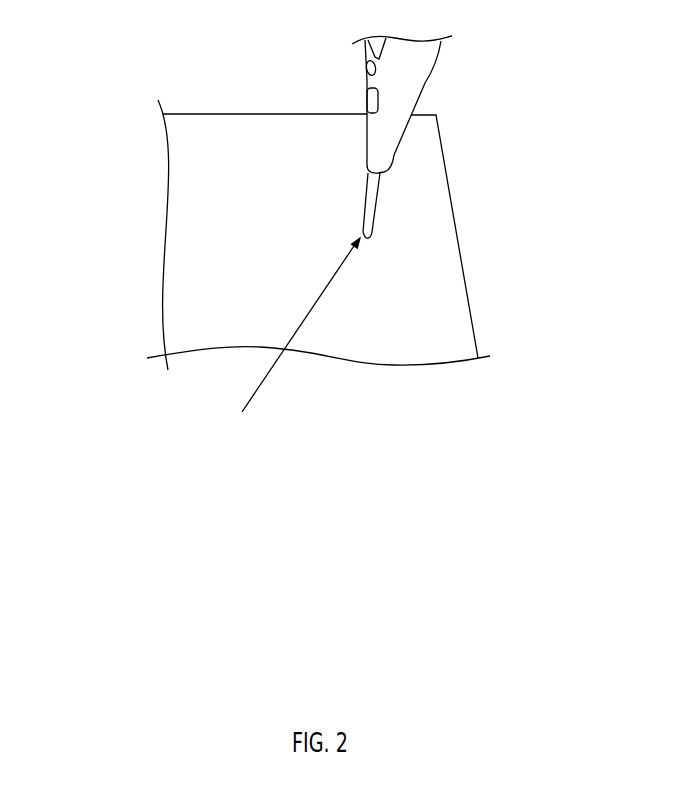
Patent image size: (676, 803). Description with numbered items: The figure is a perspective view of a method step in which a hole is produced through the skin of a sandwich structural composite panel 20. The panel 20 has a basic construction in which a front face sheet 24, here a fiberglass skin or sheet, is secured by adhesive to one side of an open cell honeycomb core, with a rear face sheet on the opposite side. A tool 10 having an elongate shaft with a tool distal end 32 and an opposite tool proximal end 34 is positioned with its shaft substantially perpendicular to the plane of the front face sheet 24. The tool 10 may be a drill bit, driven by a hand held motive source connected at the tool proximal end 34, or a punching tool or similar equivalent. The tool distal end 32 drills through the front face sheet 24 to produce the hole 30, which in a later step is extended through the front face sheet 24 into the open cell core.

The tool 10 is at (475, 144).
The sandwich structural composite panel 20 is at (280, 235).
The front face sheet 24 is at (200, 318).
The hole 30 is at (293, 344).
The tool distal end 32 is at (370, 238).
The tool proximal end 34 is at (387, 170).